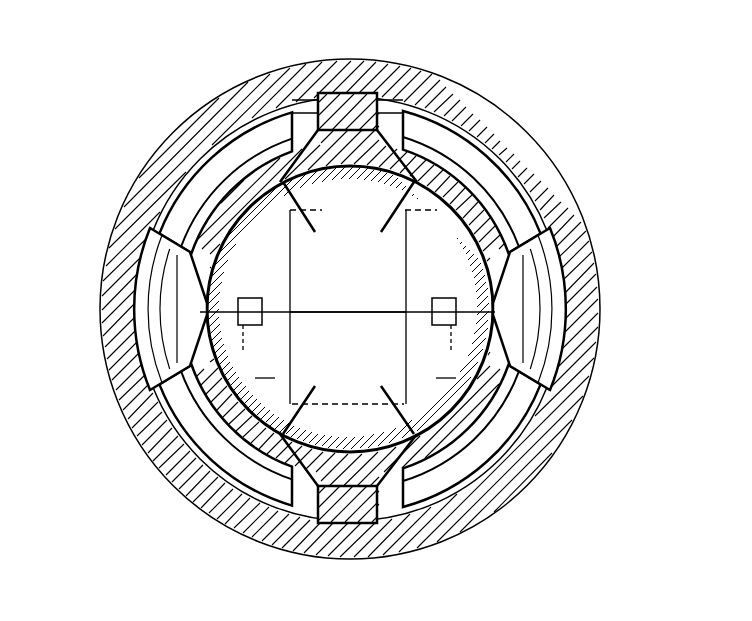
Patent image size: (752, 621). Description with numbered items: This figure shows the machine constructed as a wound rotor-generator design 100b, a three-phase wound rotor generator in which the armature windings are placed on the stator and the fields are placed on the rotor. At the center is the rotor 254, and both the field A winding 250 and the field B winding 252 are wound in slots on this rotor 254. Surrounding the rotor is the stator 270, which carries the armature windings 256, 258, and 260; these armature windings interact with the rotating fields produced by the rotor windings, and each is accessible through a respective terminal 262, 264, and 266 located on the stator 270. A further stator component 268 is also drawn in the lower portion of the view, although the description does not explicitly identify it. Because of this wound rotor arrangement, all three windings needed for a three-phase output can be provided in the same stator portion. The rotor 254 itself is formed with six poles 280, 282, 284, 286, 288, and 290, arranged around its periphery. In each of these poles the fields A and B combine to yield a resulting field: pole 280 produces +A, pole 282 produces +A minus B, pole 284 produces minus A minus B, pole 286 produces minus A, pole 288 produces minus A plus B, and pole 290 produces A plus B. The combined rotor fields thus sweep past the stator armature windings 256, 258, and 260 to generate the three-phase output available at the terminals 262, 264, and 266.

The wound rotor-generator design 100b is at (660, 74).
The field A winding 250 is at (323, 311).
The field B winding 252 is at (292, 276).
The rotor 254 is at (331, 356).
The armature winding 256 is at (182, 240).
The armature winding 258 is at (352, 92).
The armature winding 260 is at (538, 278).
The terminal 262 is at (185, 271).
The terminal 264 is at (212, 150).
The terminal 266 is at (480, 190).
The arcuate segment 268 is at (168, 425).
The stator 270 is at (588, 312).
The pole 280 is at (331, 206).
The pole 282 is at (417, 273).
The pole 284 is at (415, 378).
The pole 286 is at (331, 429).
The pole 288 is at (235, 378).
The pole 290 is at (235, 268).